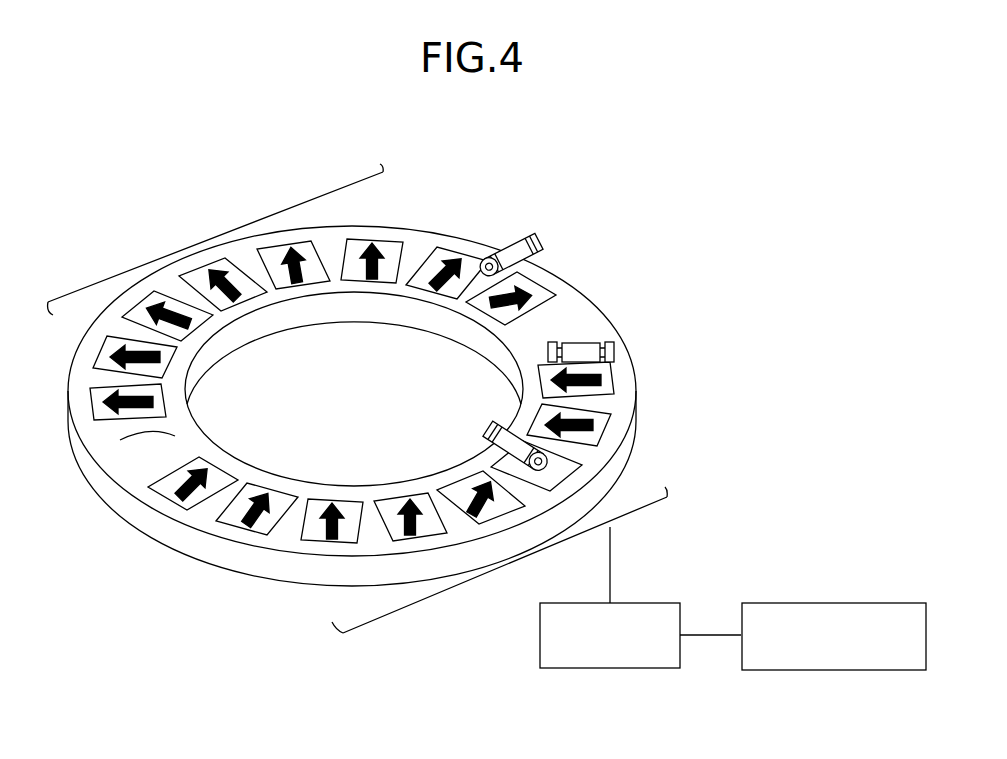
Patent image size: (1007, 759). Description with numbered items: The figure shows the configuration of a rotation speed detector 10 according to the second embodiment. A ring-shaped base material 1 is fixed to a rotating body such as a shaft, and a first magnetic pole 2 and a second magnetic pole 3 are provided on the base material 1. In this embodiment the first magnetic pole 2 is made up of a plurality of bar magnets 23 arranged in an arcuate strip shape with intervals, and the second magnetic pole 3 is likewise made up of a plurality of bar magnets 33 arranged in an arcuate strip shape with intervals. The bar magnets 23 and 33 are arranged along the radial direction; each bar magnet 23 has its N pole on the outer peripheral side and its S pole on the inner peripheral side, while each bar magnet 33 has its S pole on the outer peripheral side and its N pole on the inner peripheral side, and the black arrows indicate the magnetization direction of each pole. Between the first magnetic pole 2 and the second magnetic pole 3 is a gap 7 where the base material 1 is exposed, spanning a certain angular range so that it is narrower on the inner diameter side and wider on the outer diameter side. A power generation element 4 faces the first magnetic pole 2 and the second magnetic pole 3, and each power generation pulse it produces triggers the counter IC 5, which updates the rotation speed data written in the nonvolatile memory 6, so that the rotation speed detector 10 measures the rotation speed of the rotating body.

The rotation speed detector 10 is at (243, 187).
The base material 1 is at (130, 468).
The first magnetic pole 2 is at (215, 230).
The bar magnet 23 is at (203, 275).
The bar magnet 33 is at (240, 515).
The second magnetic pole 3 is at (502, 568).
The power generation element 4 is at (522, 253).
The gap 7 is at (165, 437).
The counter integrated circuit 5 is at (645, 603).
The nonvolatile memory 6 is at (891, 603).